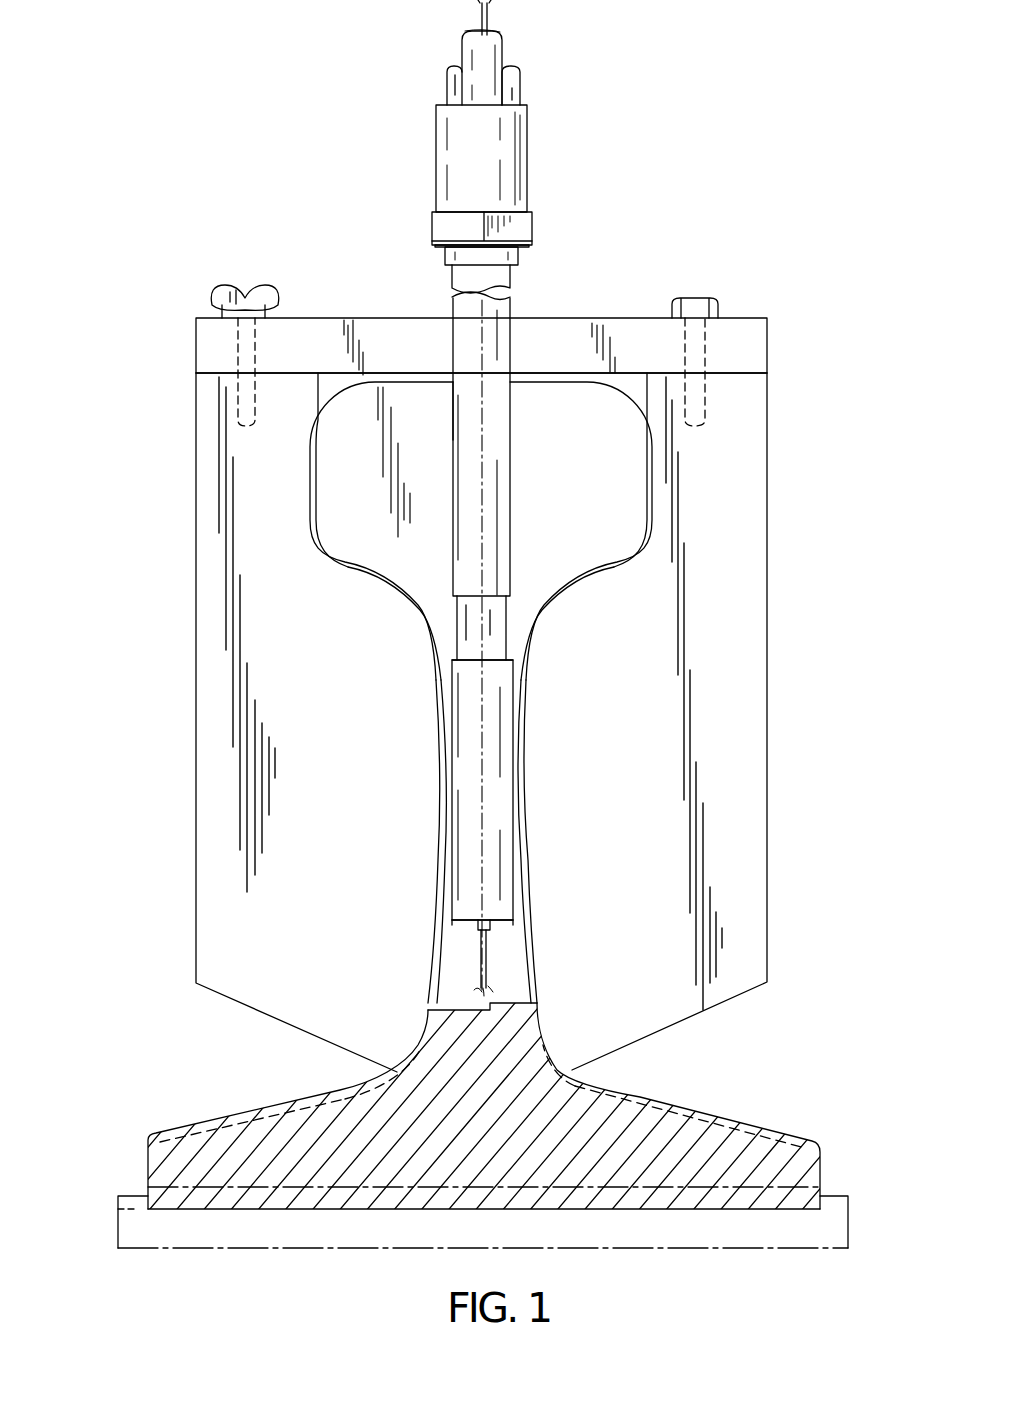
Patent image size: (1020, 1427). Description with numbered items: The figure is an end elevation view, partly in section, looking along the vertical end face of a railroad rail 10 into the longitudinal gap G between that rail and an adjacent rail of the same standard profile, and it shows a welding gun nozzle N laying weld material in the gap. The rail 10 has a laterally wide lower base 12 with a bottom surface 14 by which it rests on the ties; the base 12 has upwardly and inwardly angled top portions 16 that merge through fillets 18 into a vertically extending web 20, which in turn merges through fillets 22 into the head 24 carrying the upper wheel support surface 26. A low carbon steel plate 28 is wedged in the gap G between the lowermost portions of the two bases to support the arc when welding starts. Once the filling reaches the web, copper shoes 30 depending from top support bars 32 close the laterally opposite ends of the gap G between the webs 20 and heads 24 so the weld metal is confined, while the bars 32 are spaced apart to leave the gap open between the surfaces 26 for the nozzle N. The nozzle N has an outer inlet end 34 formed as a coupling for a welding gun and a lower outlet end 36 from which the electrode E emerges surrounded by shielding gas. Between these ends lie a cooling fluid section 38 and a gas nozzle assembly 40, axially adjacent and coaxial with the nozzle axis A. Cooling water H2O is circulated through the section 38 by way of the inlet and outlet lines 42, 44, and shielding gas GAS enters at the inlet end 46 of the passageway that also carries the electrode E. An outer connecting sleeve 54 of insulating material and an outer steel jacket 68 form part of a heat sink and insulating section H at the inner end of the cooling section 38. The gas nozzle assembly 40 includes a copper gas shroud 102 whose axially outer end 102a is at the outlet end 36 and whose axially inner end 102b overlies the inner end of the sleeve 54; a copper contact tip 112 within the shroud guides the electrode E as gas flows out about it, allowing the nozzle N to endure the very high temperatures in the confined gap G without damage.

The railroad rail 10 is at (619, 381).
The base 12 is at (736, 1110).
The bottom surface 14 is at (248, 1209).
The top portions 16 is at (318, 1098).
The fillets 18 is at (412, 1060).
The web 20 is at (531, 943).
The fillets 22 is at (410, 599).
The head 24 is at (352, 392).
The upper wheel support surface 26 is at (541, 382).
The plate 28 is at (758, 1185).
The copper shoes 30 is at (744, 457).
The top support bars 32 is at (398, 327).
The inlet end 34 is at (434, 135).
The outlet end 36 is at (458, 928).
The cooling fluid section 38 is at (512, 475).
The gas nozzle assembly 40 is at (517, 763).
The cooling fluid inlet line 42 is at (521, 97).
The cooling fluid outlet line 44 is at (447, 92).
The inlet end of shielding gas and electrode passageway 46 is at (470, 43).
The outer connecting sleeve 54 is at (462, 614).
The outer steel jacket 68 is at (453, 430).
The gas shroud 102 is at (503, 825).
The axially outer end of shroud 102a is at (510, 912).
The axially inner end of shroud 102b is at (500, 672).
The contact tip 112 is at (478, 920).
The electrode E is at (480, 18).
The shielding gas GAS is at (496, 32).
The cooling water H2O is at (457, 67).
The welding gun nozzle N is at (574, 230).
The heat sink and insulating section H is at (452, 639).
The nozzle axis A is at (483, 767).
The longitudinal gap G is at (512, 973).